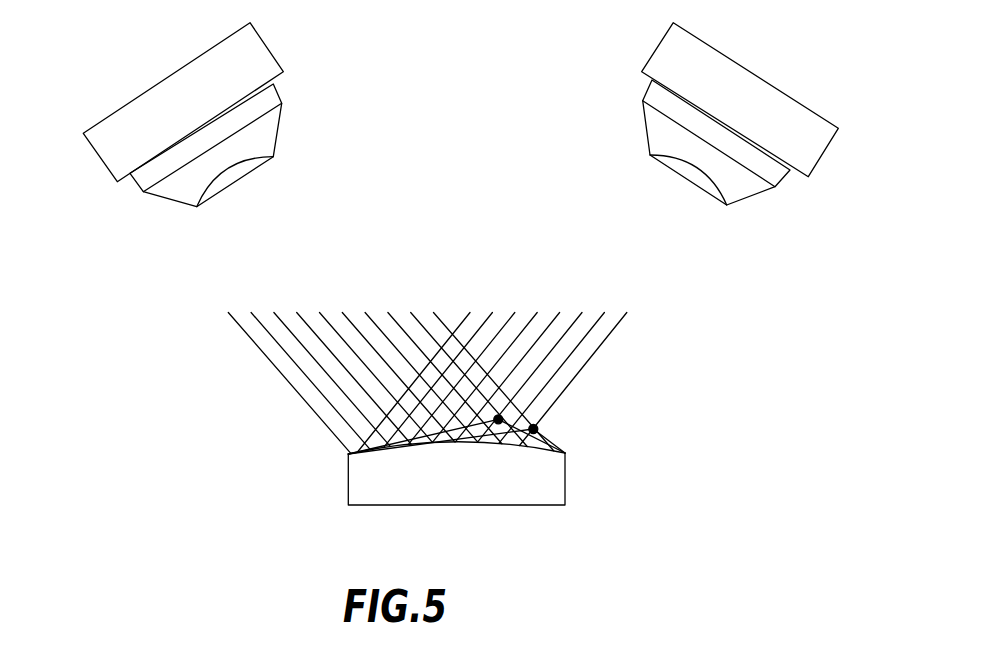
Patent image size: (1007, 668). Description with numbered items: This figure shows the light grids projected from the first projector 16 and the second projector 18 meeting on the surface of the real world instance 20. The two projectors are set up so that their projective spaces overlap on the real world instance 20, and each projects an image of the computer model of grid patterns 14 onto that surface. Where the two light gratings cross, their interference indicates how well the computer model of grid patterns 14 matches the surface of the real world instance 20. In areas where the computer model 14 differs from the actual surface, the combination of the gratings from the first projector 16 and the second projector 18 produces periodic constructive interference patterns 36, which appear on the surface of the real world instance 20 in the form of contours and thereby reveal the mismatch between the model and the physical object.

The computer model 14 is at (535, 451).
The first projector 16 is at (160, 148).
The second projector 18 is at (780, 147).
The real world instance 20 is at (560, 428).
The periodic constructive interference patterns 36 is at (524, 413).